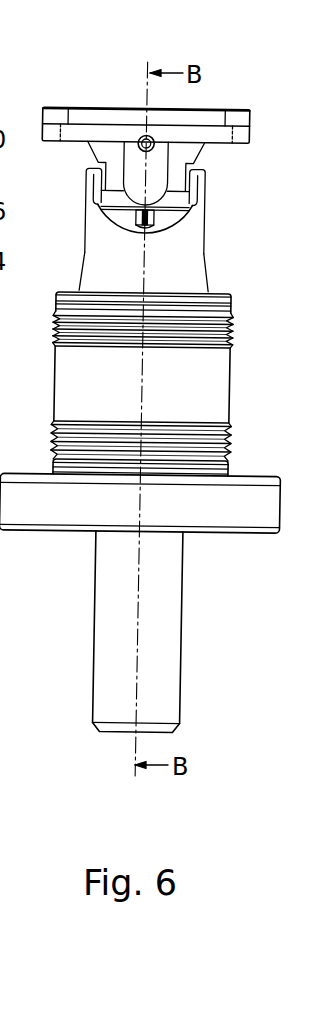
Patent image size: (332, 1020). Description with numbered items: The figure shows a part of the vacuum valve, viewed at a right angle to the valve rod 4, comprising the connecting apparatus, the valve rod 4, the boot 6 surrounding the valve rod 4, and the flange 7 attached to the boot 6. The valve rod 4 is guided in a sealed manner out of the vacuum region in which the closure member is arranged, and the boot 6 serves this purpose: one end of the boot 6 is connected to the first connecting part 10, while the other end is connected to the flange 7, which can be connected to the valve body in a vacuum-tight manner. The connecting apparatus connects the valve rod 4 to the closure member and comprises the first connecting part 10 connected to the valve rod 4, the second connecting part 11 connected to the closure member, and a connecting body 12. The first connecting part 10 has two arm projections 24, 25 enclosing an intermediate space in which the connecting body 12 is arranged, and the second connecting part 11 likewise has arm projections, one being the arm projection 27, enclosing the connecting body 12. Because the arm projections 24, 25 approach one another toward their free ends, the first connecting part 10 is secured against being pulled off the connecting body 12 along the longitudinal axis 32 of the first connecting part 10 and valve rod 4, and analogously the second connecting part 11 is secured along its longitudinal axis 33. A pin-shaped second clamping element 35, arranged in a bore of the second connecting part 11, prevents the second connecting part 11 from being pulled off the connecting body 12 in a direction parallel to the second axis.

The second connecting part 11 is at (92, 118).
The longitudinal axis of the second connecting part 33 is at (147, 115).
The second clamping element 35 is at (155, 143).
The arm projection 27 is at (172, 182).
The arm projection 24 is at (90, 197).
The arm projection 25 is at (207, 195).
The connecting body 12 is at (163, 220).
The longitudinal axis of the first connecting part 32 is at (143, 267).
The first connecting part 10 is at (182, 280).
The boot 6 is at (113, 450).
The flange 7 is at (27, 510).
The valve rod 4 is at (165, 647).